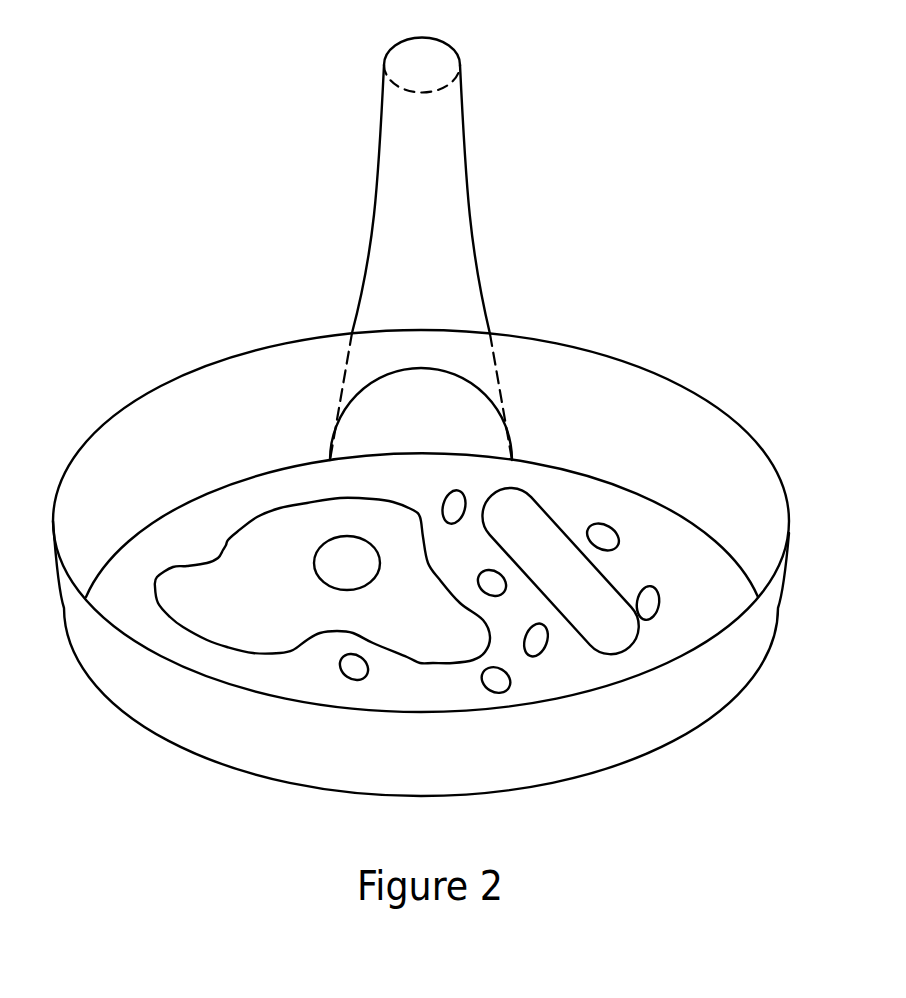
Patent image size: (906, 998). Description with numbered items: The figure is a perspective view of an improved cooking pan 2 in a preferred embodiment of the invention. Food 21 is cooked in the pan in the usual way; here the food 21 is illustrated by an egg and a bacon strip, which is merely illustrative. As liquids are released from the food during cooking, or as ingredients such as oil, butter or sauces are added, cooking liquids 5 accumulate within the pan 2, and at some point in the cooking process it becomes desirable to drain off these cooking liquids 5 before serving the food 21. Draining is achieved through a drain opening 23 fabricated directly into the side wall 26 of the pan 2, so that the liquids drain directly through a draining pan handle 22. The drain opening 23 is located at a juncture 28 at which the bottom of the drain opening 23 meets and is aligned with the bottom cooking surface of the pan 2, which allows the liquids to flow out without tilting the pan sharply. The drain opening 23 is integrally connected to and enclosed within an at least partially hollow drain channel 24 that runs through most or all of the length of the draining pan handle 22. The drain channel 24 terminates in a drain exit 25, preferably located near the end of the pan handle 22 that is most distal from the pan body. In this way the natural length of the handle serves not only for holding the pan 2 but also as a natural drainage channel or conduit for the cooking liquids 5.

The cooking pan 2 is at (421, 514).
The cooking liquids 5 is at (357, 670).
The food 21 is at (535, 543).
The draining pan handle 22 is at (359, 248).
The drain opening 23 is at (436, 431).
The drain channel 24 is at (436, 251).
The drain exit 25 is at (436, 74).
The side wall 26 is at (610, 437).
The juncture 28 is at (463, 453).